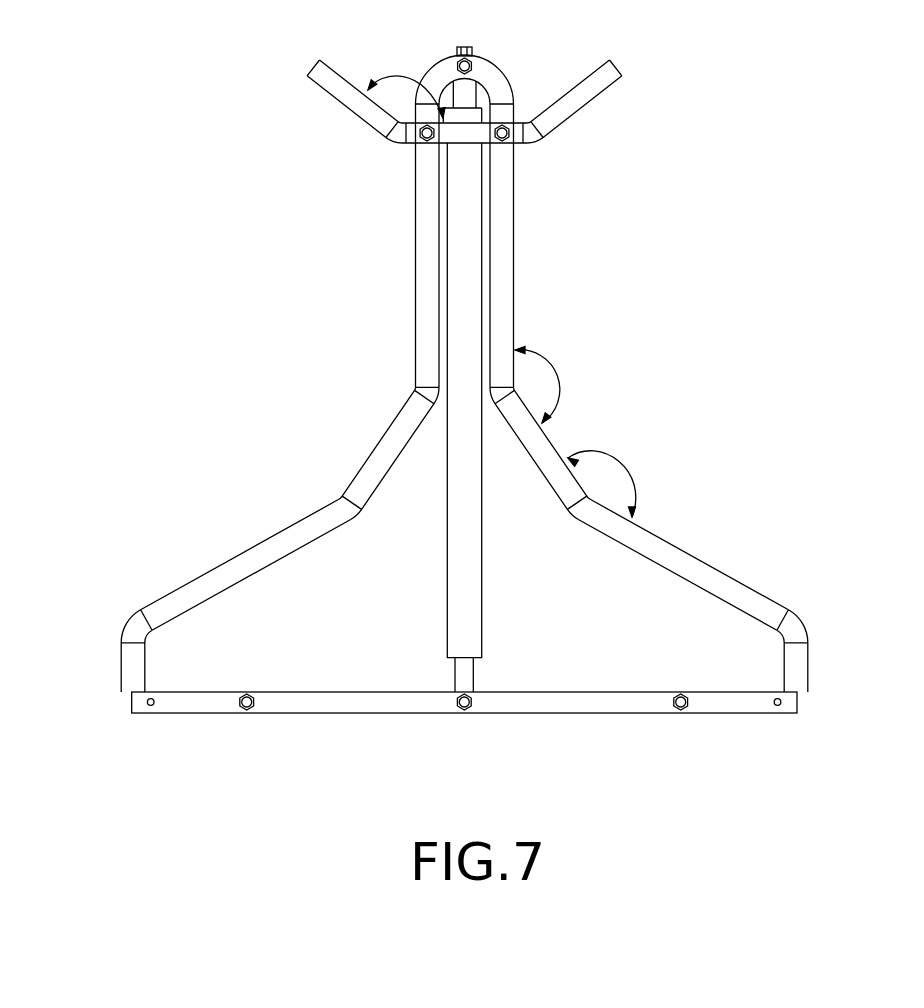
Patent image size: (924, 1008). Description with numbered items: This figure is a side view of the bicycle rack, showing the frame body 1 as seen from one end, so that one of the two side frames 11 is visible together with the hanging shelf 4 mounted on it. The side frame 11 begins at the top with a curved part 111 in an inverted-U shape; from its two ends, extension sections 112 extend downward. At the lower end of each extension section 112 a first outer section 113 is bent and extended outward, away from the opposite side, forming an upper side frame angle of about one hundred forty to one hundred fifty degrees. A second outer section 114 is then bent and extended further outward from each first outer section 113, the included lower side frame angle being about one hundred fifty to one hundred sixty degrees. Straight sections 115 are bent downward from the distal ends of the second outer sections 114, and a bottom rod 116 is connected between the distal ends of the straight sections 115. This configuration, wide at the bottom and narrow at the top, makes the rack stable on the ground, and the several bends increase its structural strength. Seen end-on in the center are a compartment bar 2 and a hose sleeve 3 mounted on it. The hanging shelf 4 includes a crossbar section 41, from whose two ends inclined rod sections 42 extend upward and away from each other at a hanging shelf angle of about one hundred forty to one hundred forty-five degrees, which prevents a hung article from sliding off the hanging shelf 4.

The frame body 1 is at (795, 96).
The side frame 11 is at (525, 309).
The curved part 111 is at (493, 73).
The extension section 112 is at (505, 211).
The first outer section 113 is at (545, 448).
The second outer section 114 is at (677, 555).
The straight section 115 is at (798, 658).
The bottom rod 116 is at (738, 703).
The compartment bar 2 is at (470, 675).
The hose sleeve 3 is at (470, 547).
The hanging shelf 4 is at (300, 92).
The crossbar section 41 is at (447, 136).
The inclined rod section 42 is at (355, 106).